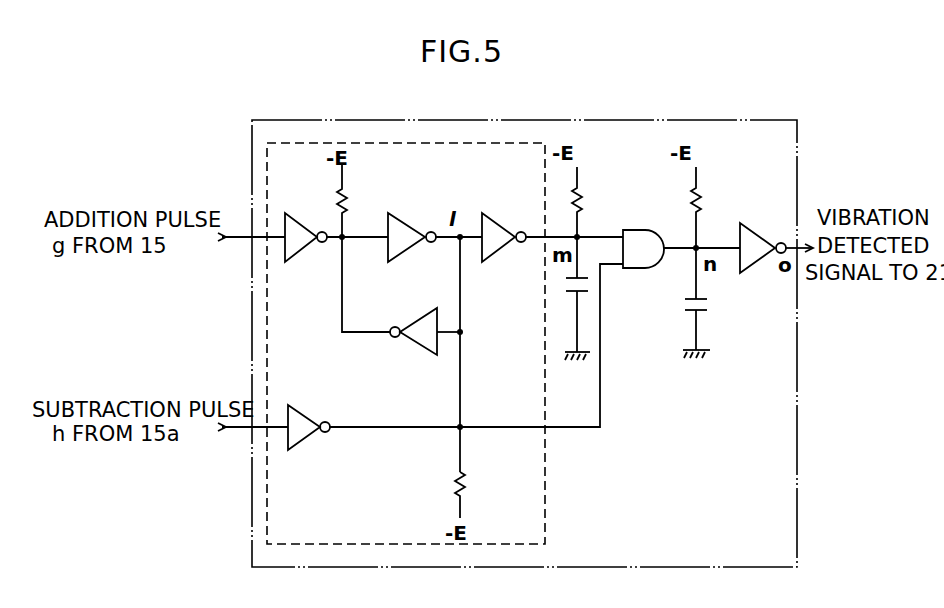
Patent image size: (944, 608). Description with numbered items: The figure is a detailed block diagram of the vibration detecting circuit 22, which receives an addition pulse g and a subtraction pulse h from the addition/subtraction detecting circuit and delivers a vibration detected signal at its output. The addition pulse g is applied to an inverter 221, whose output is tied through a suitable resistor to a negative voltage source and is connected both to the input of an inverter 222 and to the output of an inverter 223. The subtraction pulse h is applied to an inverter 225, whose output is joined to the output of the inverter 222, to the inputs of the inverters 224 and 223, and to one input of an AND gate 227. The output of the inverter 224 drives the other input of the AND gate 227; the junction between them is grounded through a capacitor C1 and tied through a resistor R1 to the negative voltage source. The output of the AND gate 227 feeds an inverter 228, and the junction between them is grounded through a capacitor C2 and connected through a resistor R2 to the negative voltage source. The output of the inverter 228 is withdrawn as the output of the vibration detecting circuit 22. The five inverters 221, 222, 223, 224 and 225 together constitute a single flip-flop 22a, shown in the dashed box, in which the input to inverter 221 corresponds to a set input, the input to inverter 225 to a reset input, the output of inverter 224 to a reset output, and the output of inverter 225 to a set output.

The vibration detecting circuit 22 is at (668, 540).
The flip-flop 22a is at (534, 462).
The inverter 221 is at (300, 243).
The inverter 222 is at (401, 244).
The inverter 223 is at (420, 338).
The inverter 224 is at (497, 230).
The inverter 225 is at (300, 435).
The AND gate 227 is at (636, 240).
The inverter 228 is at (744, 236).
The resistor R1 is at (580, 198).
The resistor R2 is at (699, 198).
The capacitor C1 is at (572, 291).
The capacitor C2 is at (701, 310).